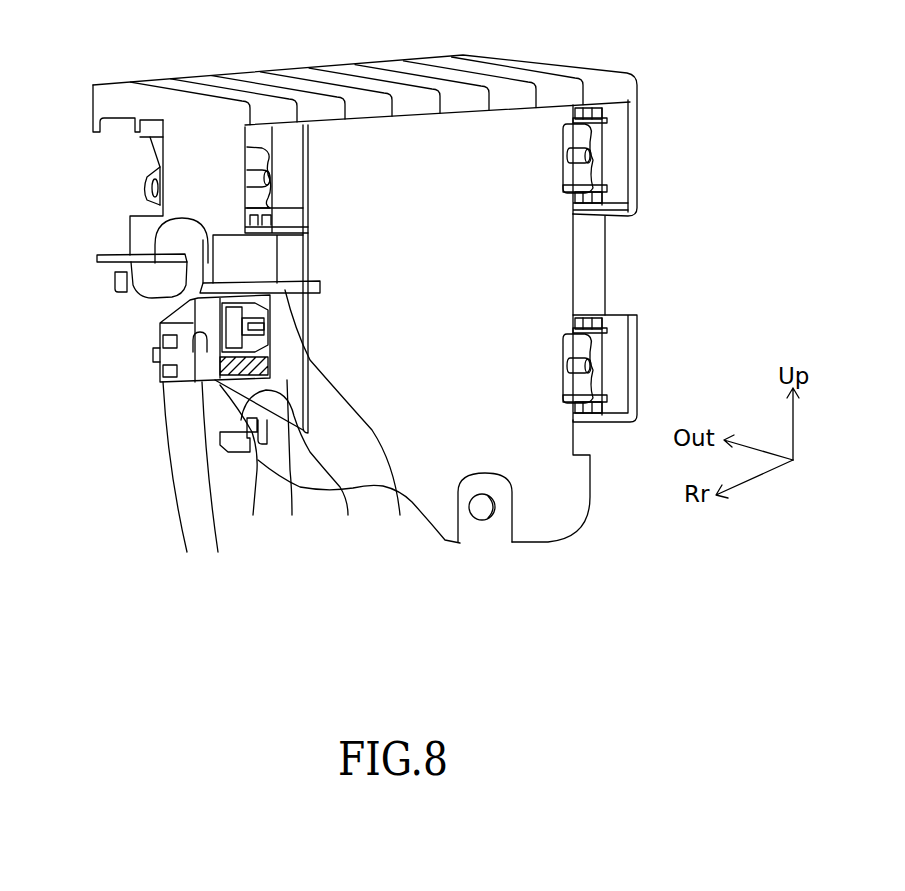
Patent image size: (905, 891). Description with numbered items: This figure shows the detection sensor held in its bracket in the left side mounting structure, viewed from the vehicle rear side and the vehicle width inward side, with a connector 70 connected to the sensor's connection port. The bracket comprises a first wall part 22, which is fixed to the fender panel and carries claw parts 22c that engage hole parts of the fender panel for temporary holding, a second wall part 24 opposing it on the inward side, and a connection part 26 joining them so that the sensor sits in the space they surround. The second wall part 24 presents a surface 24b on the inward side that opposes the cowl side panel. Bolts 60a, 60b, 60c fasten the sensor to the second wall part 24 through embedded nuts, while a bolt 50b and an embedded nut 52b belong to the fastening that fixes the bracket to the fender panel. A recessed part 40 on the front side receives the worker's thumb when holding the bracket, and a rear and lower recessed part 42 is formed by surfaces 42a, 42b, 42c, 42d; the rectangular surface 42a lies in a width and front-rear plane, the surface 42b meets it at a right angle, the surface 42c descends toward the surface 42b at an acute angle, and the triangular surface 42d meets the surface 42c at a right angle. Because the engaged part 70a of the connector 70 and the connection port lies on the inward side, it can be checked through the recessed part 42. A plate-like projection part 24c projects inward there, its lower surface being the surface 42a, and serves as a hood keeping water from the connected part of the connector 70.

The first wall part 22 is at (121, 100).
The claw part 22c is at (115, 284).
The second wall part 24 is at (233, 108).
The surface on the vehicle width inward side 24b is at (438, 468).
The projection part 24c is at (283, 283).
The connection part 26 is at (187, 137).
The recessed part 40 is at (604, 268).
The recessed part 42 is at (322, 439).
The surface 42a is at (354, 420).
The surface 42b is at (308, 470).
The surface 42c is at (304, 465).
The surface 42d is at (248, 467).
The bolt 50b is at (150, 172).
The nut 52b is at (147, 192).
The bolt 60a is at (593, 157).
The bolt 60b is at (248, 178).
The bolt 60c is at (593, 365).
The connector 70 is at (175, 308).
The engaged part 70a is at (230, 327).